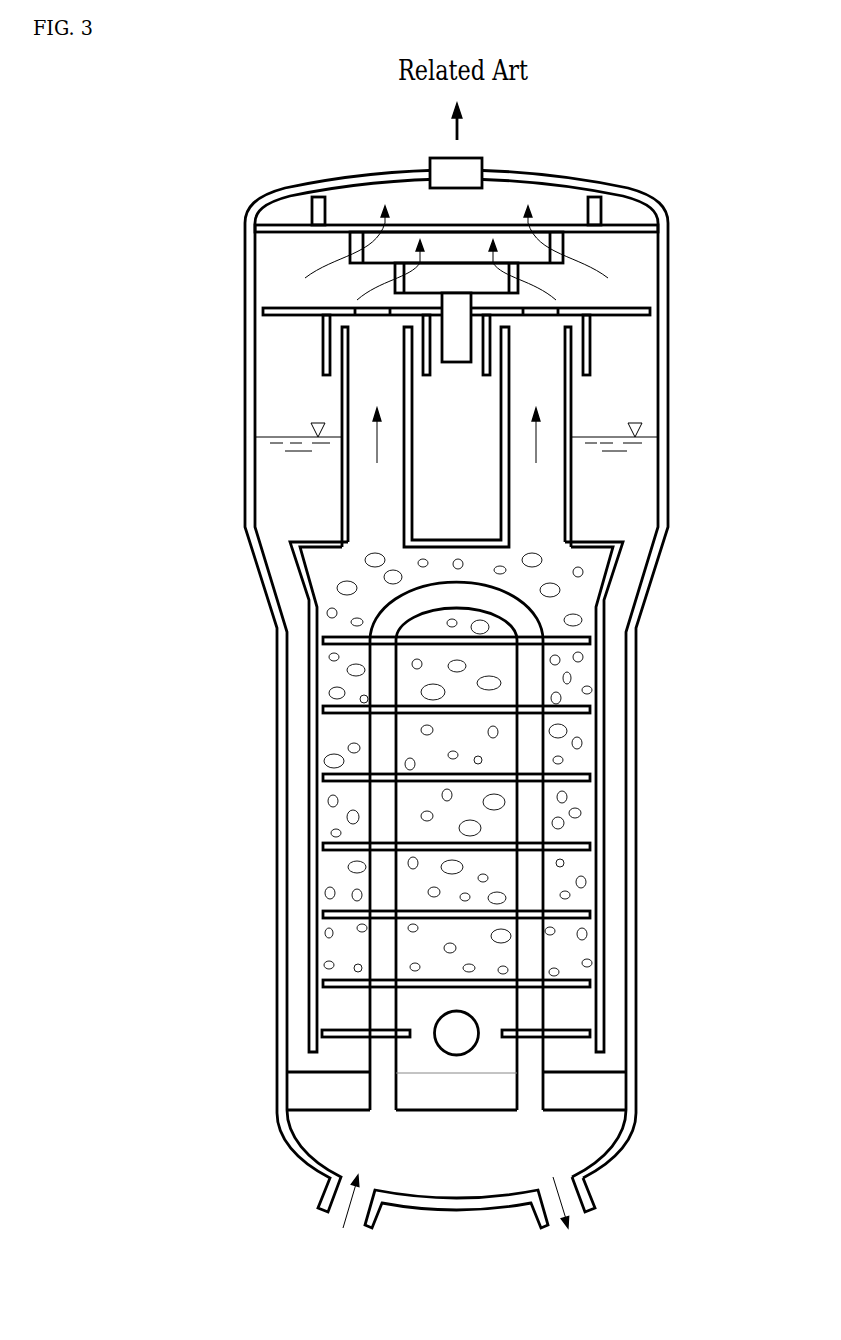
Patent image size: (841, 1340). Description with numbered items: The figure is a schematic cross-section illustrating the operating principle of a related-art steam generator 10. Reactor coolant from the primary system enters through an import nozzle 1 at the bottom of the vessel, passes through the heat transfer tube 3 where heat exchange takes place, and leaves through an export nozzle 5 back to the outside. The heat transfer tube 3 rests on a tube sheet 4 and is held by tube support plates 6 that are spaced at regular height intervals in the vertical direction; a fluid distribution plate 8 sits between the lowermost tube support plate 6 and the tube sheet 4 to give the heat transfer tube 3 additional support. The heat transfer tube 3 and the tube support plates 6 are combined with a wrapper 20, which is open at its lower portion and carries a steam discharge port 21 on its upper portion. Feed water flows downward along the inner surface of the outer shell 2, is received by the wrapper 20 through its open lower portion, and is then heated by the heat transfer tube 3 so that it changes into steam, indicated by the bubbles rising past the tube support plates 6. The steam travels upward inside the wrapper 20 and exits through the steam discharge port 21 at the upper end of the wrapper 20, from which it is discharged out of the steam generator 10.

The steam generator 10 is at (486, 674).
The import nozzle 1 is at (377, 1220).
The outer shell 2 is at (637, 675).
The heat transfer tube 3 is at (535, 815).
The tube sheet 4 is at (583, 1100).
The export nozzle 5 is at (590, 1195).
The tube support plates 6 is at (333, 853).
The fluid distribution plate 8 is at (582, 1028).
The wrapper 20 is at (605, 738).
The steam discharge port 21 is at (565, 497).